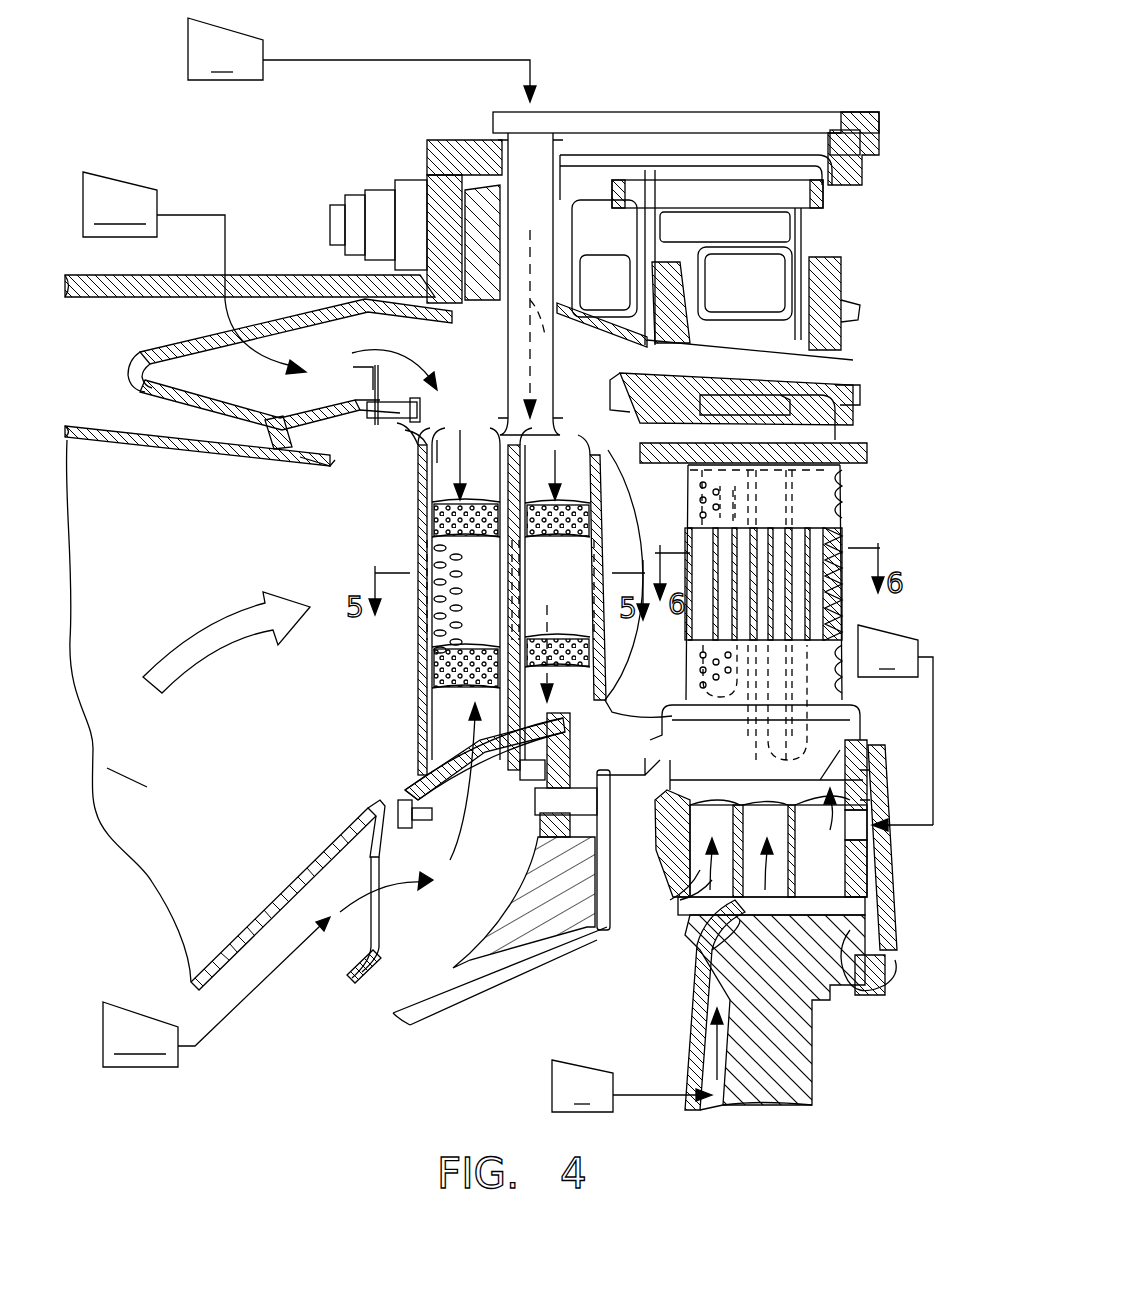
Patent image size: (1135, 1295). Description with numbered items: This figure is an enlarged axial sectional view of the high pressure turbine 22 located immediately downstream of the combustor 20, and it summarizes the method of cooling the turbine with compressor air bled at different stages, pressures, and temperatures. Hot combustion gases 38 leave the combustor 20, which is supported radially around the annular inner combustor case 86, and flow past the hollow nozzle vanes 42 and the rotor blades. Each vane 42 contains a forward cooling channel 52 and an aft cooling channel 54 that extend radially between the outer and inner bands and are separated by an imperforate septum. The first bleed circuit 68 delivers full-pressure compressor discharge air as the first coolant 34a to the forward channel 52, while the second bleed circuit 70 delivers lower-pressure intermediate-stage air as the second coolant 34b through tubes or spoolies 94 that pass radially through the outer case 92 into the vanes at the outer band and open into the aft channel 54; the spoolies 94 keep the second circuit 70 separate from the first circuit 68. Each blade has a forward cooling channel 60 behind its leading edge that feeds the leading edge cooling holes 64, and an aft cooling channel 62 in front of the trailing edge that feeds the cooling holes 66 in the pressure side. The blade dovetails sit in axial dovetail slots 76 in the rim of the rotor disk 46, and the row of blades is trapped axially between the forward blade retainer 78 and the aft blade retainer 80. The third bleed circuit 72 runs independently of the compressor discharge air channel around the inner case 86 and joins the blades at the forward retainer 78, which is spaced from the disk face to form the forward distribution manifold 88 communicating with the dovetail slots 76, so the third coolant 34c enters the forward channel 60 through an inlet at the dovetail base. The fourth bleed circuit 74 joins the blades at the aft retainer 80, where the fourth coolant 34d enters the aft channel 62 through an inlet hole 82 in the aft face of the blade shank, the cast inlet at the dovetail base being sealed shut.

The high pressure turbine 22 is at (824, 40).
The second bleed circuit 70 is at (378, 60).
The first bleed circuit 68 is at (228, 233).
The outer case 92 is at (132, 275).
The spoolies 94 is at (545, 206).
The first coolant 34a is at (405, 348).
The second coolant 34b is at (558, 350).
The third coolant 34c is at (688, 1030).
The fourth coolant 34d is at (825, 830).
The combustor 20 is at (172, 559).
The combustion gases 38 is at (200, 633).
The nozzle vanes 42 is at (405, 690).
The forward cooling channel 52 is at (466, 719).
The aft cooling channel 54 is at (584, 694).
The forward cooling channel 60 is at (690, 640).
The cooling holes 64 is at (680, 508).
The aft cooling channel 62 is at (825, 522).
The cooling holes 66 is at (832, 482).
The fourth bleed circuit 74 is at (930, 695).
The inlet hole 82 is at (880, 832).
The rotor disk 46 is at (788, 994).
The aft blade retainer 80 is at (880, 950).
The dovetail slot 76 is at (690, 900).
The forward blade retainer 78 is at (690, 1055).
The third bleed circuit 72 is at (665, 1100).
The forward distribution manifold 88 is at (714, 1110).
The inner combustor case 86 is at (452, 975).